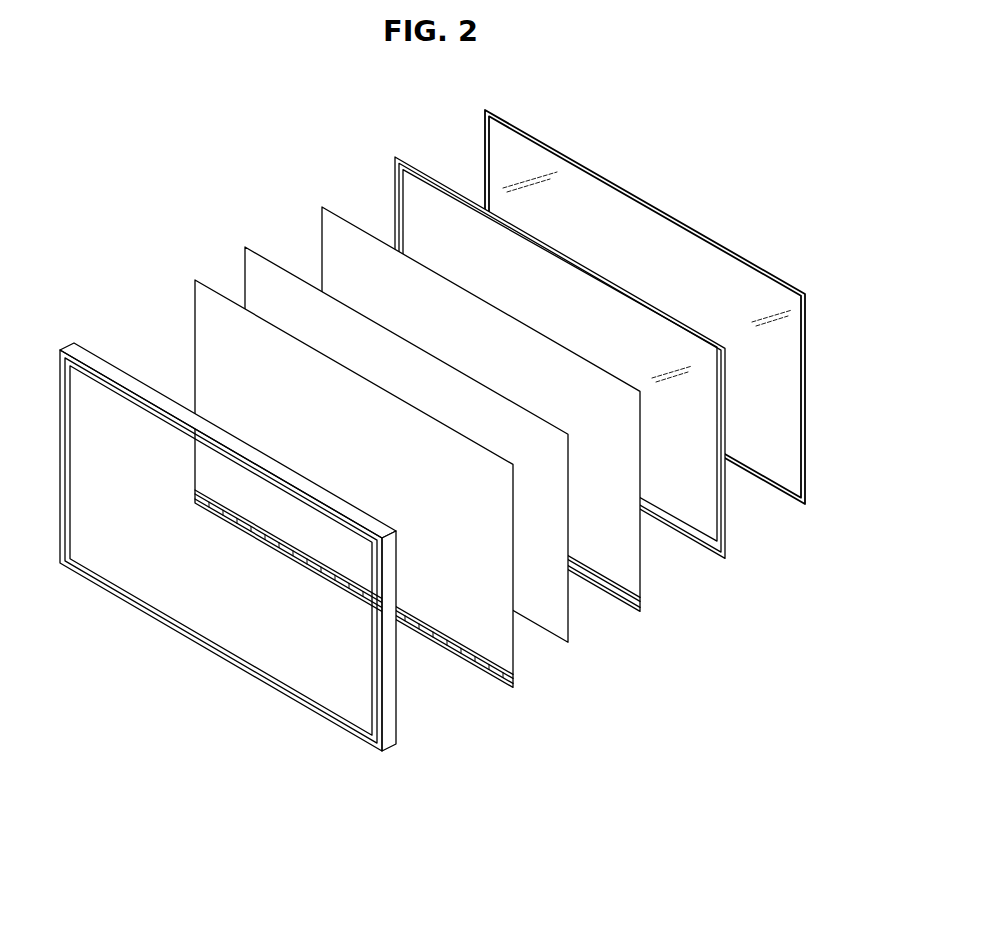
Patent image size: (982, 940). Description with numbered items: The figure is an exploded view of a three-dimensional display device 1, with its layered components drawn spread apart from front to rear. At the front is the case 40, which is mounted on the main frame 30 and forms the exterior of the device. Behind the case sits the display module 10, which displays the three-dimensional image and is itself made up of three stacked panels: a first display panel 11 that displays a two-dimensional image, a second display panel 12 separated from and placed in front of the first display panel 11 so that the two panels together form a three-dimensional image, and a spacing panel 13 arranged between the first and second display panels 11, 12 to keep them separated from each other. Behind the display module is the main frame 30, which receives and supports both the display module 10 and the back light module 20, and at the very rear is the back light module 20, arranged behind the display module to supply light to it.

The 3D display device 1 is at (288, 153).
The 3D display module 10 is at (460, 485).
The first display panel 11 is at (640, 588).
The second display panel 12 is at (391, 514).
The spacing panel 13 is at (552, 632).
The back light module 20 is at (817, 510).
The main frame 30 is at (732, 560).
The case 40 is at (330, 724).